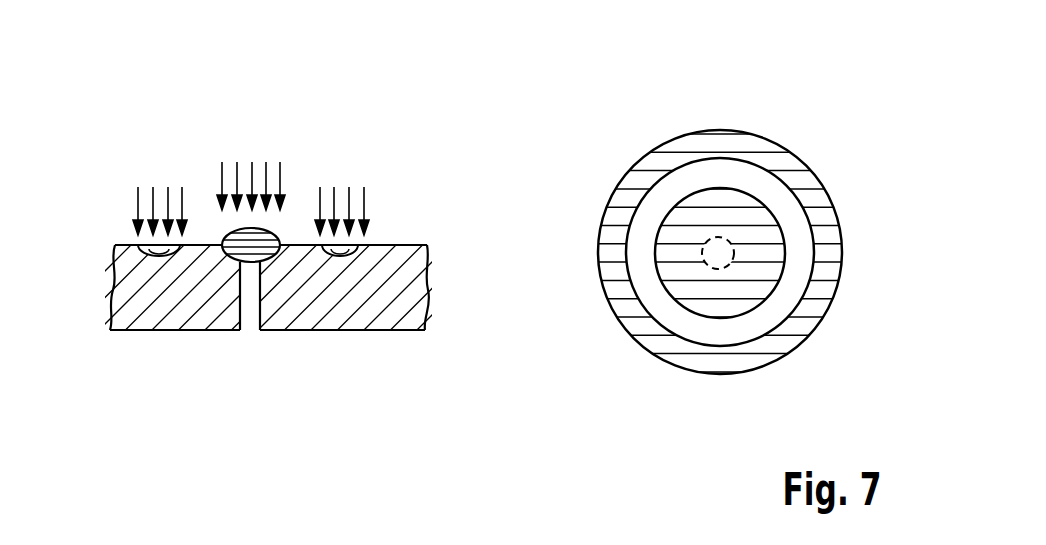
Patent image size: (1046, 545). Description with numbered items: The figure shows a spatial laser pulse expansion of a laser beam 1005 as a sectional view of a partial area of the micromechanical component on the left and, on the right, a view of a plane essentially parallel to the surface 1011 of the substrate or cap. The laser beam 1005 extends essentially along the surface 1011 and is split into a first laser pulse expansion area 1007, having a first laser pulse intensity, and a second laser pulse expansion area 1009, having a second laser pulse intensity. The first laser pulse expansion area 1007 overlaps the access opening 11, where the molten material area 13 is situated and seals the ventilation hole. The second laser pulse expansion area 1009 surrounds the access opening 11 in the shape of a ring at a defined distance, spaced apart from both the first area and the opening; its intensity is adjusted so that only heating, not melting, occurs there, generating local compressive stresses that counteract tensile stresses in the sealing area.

The access opening 11 is at (250, 340).
The material area 13 is at (223, 237).
The laser beam 1005 is at (128, 177).
The first laser pulse expansion area 1007 is at (280, 240).
The second laser pulse expansion area 1009 is at (150, 245).
The surface 1011 is at (395, 246).